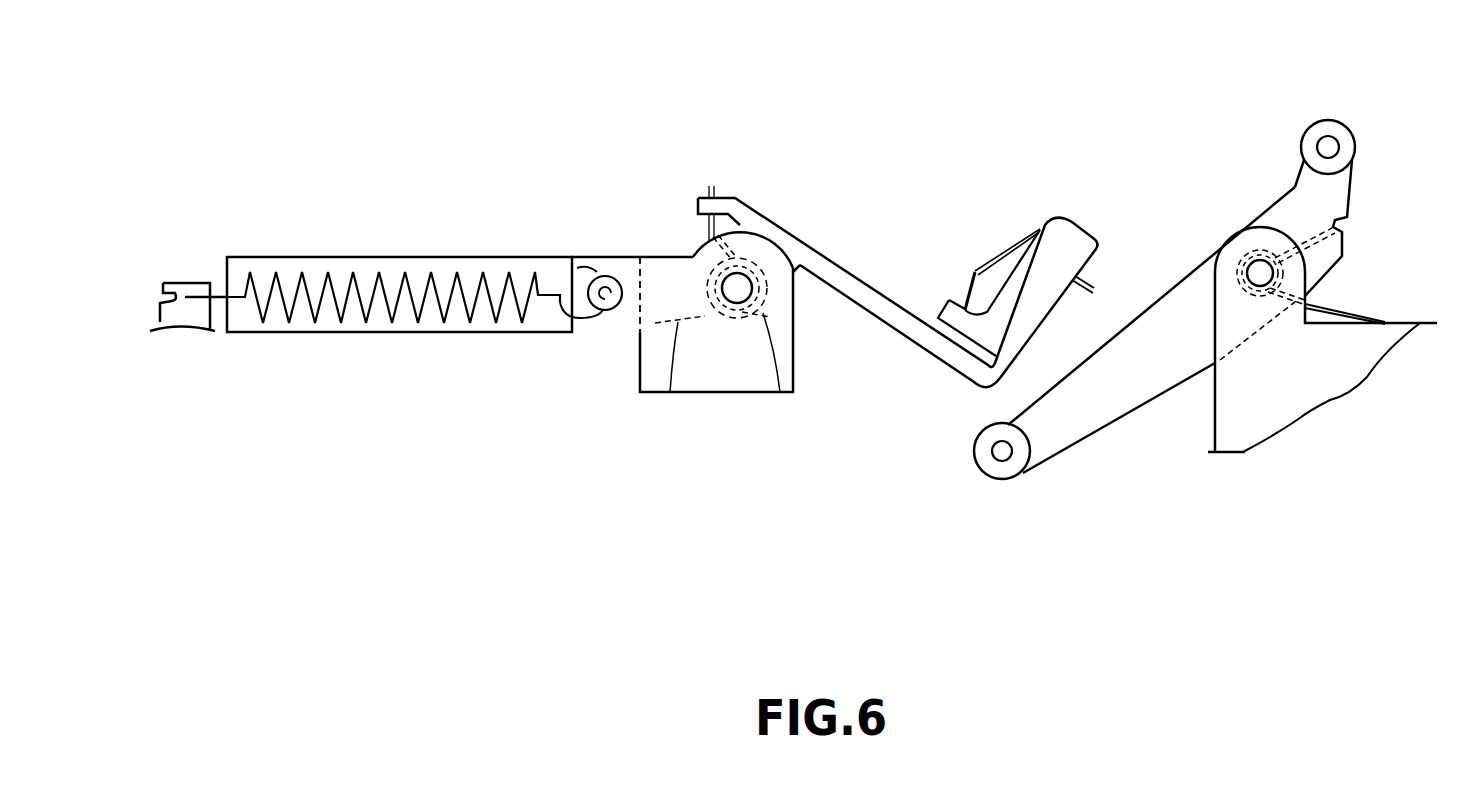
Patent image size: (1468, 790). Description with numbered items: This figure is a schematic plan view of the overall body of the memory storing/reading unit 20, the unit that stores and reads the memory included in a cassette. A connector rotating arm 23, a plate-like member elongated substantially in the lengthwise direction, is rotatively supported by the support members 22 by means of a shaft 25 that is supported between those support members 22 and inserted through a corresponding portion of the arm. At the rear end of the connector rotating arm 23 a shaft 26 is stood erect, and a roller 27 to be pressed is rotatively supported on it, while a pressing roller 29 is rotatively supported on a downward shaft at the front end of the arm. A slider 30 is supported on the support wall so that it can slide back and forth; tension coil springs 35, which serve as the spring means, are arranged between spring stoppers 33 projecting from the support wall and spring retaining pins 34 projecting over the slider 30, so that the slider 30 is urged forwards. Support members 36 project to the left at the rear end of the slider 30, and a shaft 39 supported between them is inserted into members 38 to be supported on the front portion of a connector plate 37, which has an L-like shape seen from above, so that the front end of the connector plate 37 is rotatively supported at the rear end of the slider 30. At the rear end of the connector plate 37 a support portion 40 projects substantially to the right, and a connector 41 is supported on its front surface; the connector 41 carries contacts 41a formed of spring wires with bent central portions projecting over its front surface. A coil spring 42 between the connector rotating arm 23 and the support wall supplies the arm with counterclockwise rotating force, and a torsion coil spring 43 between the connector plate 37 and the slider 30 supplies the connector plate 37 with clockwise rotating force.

The memory storing/reading unit 20 is at (796, 522).
The support members 22 is at (1235, 248).
The connector rotating arm 23 is at (1107, 410).
The shaft 25 is at (1255, 295).
The shaft 26 is at (1325, 143).
The roller to be pressed 27 is at (1343, 138).
The pressing roller 29 is at (1005, 470).
The slider 30 is at (468, 262).
The spring stoppers 33 is at (185, 283).
The spring retaining pins 34 is at (608, 278).
The tension coil springs 35 is at (440, 310).
The support members 36 is at (755, 245).
The connector plate 37 is at (855, 288).
The members to be supported 38 is at (780, 392).
The shaft 39 is at (737, 300).
The support portion 40 is at (1086, 247).
The connector 41 is at (1060, 228).
The contacts 41a is at (990, 265).
The coil spring 42 is at (1335, 308).
The torsion coil spring 43 is at (670, 392).